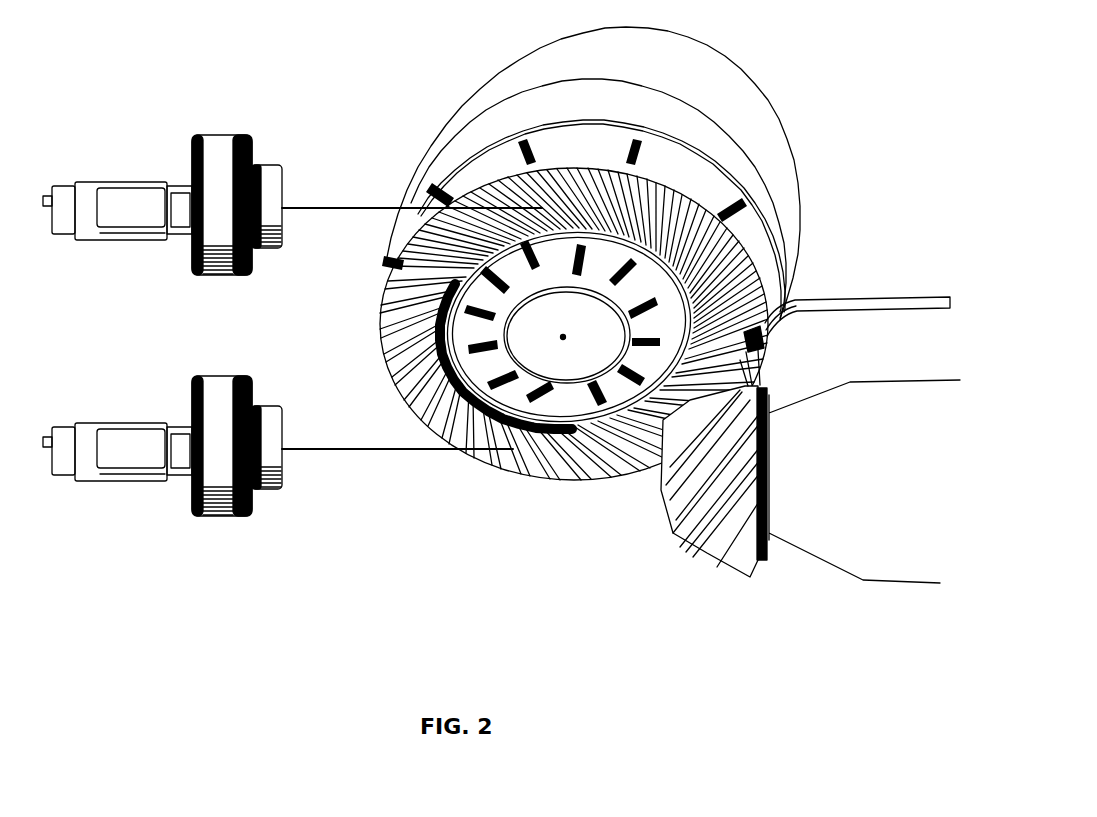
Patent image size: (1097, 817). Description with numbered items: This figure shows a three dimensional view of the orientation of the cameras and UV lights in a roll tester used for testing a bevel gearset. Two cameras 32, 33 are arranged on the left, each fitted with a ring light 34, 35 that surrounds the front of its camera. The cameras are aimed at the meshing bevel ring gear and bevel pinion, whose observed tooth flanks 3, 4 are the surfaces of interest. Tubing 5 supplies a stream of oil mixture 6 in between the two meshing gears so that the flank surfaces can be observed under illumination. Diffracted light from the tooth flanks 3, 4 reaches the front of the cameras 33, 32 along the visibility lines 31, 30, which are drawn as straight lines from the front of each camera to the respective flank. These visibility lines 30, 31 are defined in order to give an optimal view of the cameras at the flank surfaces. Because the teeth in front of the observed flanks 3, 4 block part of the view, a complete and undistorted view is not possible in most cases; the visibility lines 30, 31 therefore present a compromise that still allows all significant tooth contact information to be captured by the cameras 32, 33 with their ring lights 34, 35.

The tooth flank 3 is at (512, 447).
The tooth flank 4 is at (551, 192).
The tubing 5 is at (822, 300).
The oil mixture 6 is at (792, 340).
The visibility line 30 is at (336, 207).
The visibility line 31 is at (378, 452).
The camera 32 is at (128, 205).
The camera 33 is at (128, 452).
The ring light 34 is at (222, 150).
The ring light 35 is at (222, 515).